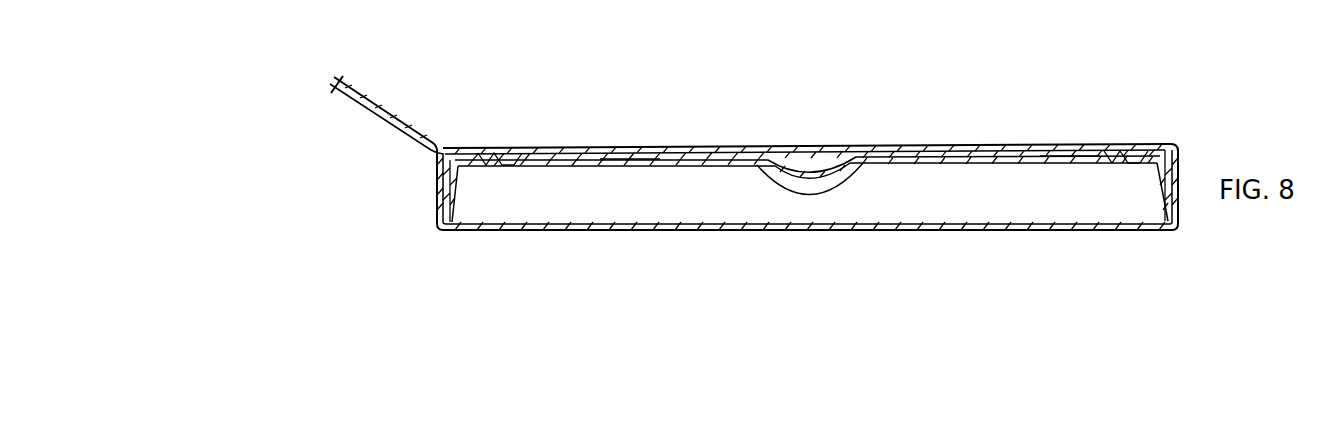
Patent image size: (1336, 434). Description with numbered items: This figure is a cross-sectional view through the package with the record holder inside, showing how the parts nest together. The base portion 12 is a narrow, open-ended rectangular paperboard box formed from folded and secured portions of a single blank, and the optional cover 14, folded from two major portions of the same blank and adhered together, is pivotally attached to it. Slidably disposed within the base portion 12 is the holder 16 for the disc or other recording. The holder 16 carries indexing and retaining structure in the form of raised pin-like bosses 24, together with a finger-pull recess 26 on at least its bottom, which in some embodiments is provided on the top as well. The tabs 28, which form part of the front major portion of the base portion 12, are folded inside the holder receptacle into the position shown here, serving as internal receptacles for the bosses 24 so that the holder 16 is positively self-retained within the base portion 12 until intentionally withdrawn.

The base portion 12 is at (862, 148).
The cover 14 is at (382, 107).
The holder 16 is at (1166, 160).
The pin-like bosses 24 is at (498, 152).
The finger-pull recess 26 is at (805, 167).
The tabs 28 is at (623, 163).